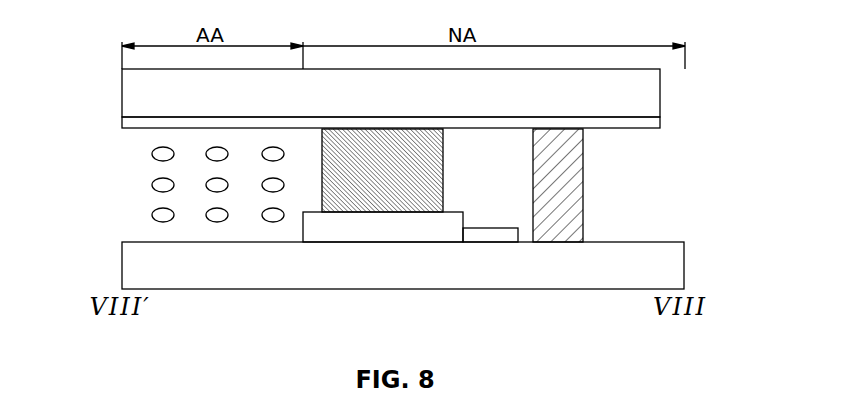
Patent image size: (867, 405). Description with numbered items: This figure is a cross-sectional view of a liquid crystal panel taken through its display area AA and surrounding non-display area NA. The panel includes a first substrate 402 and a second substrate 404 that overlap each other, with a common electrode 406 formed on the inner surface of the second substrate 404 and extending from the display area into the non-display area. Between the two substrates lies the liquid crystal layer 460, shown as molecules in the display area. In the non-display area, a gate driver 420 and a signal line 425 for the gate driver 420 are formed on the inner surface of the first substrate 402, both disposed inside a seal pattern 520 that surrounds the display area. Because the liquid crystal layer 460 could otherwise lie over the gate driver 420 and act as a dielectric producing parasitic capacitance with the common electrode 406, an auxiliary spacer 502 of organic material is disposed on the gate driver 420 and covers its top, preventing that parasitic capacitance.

The first substrate 402 is at (675, 265).
The second substrate 404 is at (651, 90).
The common electrode 406 is at (660, 125).
The gate driver 420 is at (360, 229).
The signal line 425 is at (492, 236).
The liquid crystal layer 460 is at (152, 214).
The auxiliary spacer 502 is at (443, 176).
The seal pattern 520 is at (575, 174).